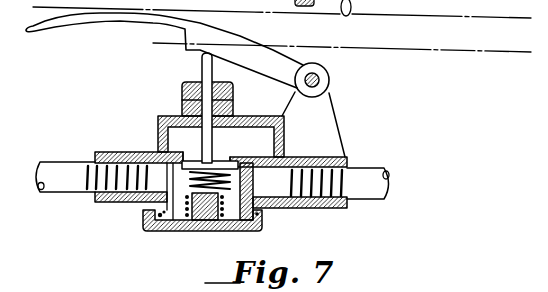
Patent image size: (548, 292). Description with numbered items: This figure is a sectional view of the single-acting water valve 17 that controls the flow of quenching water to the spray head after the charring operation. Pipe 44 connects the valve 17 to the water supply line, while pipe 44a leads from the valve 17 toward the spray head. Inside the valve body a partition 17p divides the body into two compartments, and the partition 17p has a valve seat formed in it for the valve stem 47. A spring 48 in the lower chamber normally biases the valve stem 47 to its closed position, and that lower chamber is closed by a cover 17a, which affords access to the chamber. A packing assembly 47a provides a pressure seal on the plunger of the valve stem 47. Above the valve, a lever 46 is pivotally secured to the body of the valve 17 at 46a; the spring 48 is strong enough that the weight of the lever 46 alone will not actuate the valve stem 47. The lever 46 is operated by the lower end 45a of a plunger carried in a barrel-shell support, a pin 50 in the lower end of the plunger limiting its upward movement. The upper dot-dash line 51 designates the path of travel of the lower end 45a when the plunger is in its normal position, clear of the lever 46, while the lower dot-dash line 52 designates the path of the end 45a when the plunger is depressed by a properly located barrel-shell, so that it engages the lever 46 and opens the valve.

The single-acting water valve 17 is at (157, 140).
The cover 17a is at (173, 230).
The partition 17p is at (283, 203).
The pipe 44 is at (362, 172).
The pipe 44a is at (62, 187).
The lower end of plunger 45a is at (352, 5).
The lever 46 is at (89, 18).
The pivot 46a is at (319, 78).
The valve stem 47 is at (213, 137).
The packing assembly 47a is at (194, 82).
The spring 48 is at (191, 178).
The pin 50 is at (294, 3).
The upper dot-dash line 51 is at (458, 18).
The lower dot-dash line 52 is at (465, 50).